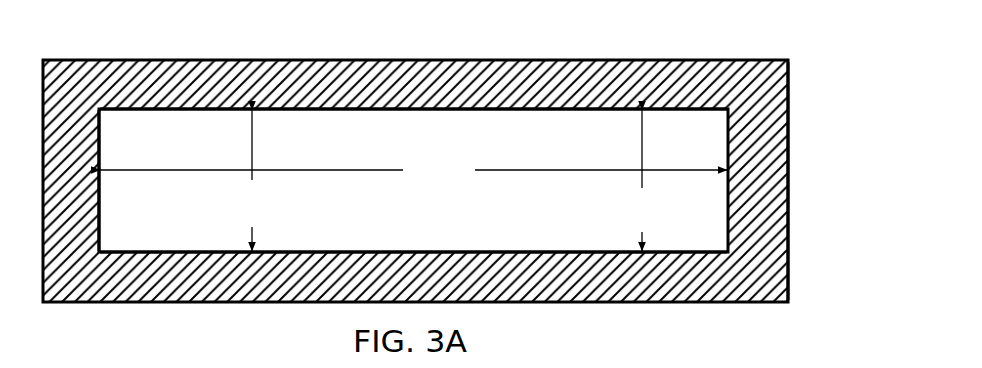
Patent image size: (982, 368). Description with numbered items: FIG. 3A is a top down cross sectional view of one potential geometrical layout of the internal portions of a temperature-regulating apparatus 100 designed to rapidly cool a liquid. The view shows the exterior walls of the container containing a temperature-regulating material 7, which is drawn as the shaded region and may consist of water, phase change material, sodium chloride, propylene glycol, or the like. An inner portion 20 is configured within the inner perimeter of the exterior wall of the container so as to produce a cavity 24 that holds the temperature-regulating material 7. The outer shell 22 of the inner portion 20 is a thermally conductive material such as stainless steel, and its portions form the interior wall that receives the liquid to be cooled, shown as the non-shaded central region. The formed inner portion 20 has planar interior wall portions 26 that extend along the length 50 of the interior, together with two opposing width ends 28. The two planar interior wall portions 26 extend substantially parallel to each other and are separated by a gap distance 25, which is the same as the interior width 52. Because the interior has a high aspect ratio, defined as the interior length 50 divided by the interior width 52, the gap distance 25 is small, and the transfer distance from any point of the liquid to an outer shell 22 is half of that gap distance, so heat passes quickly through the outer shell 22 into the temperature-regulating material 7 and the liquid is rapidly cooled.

The temperature-regulating apparatus 100 is at (798, 97).
The inner portion 20 is at (788, 142).
The temperature-regulating material 7 is at (788, 198).
The cavity 24 is at (788, 262).
The width end 28 is at (100, 208).
The outer shell 22 is at (287, 252).
The planar interior wall portion 26 is at (468, 252).
The length 50 is at (413, 176).
The interior width 52 is at (252, 180).
The gap distance 25 is at (642, 180).